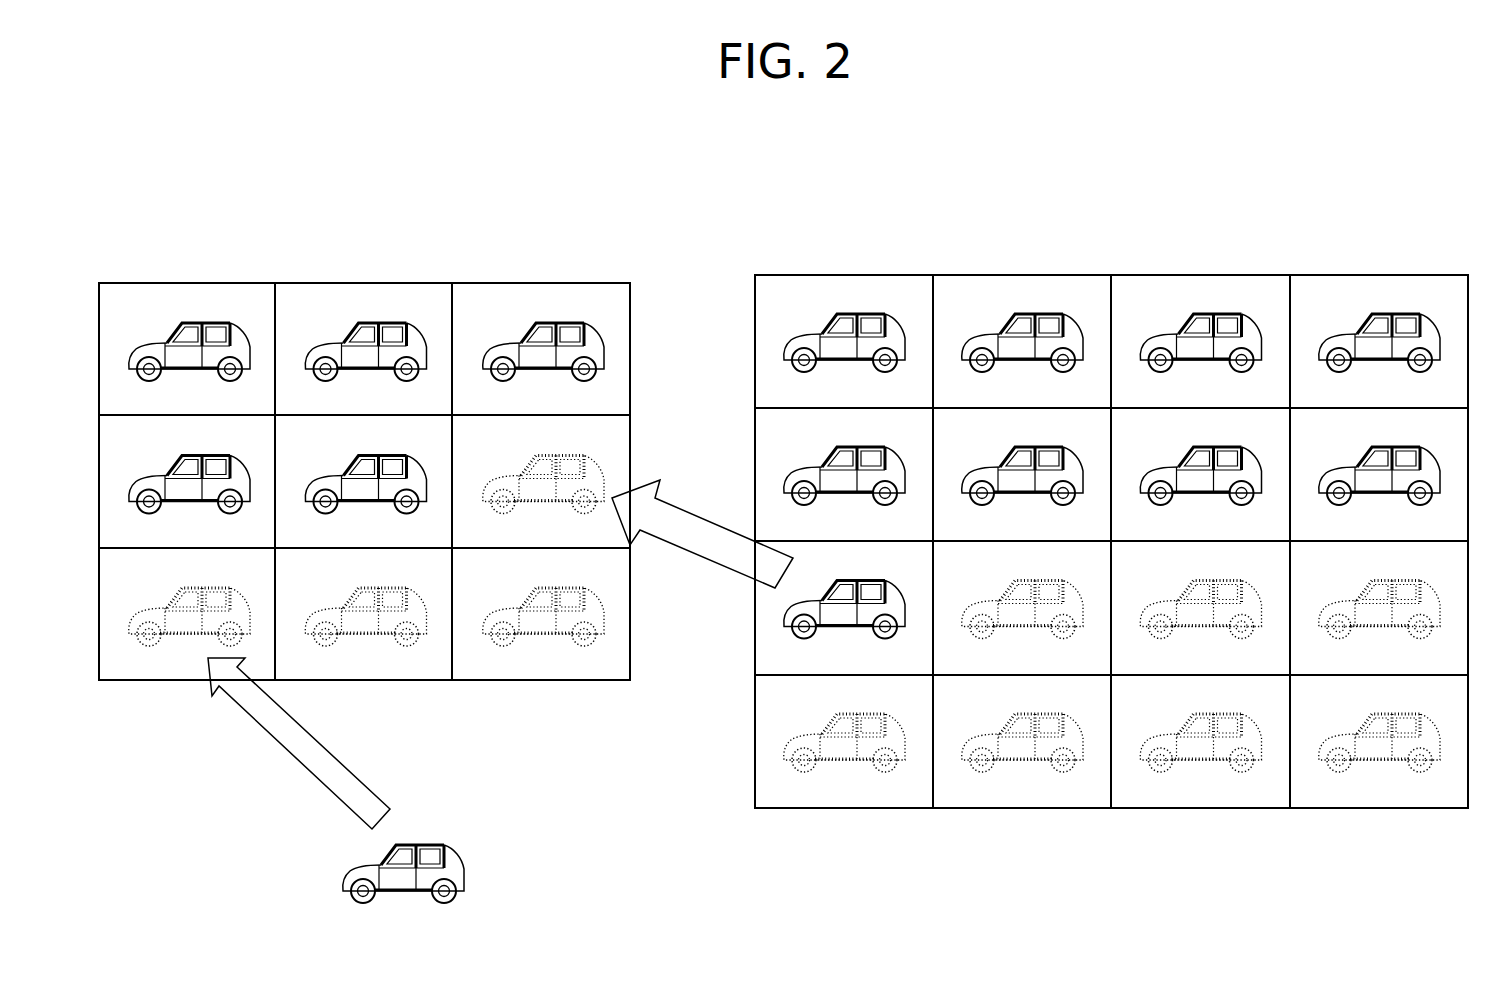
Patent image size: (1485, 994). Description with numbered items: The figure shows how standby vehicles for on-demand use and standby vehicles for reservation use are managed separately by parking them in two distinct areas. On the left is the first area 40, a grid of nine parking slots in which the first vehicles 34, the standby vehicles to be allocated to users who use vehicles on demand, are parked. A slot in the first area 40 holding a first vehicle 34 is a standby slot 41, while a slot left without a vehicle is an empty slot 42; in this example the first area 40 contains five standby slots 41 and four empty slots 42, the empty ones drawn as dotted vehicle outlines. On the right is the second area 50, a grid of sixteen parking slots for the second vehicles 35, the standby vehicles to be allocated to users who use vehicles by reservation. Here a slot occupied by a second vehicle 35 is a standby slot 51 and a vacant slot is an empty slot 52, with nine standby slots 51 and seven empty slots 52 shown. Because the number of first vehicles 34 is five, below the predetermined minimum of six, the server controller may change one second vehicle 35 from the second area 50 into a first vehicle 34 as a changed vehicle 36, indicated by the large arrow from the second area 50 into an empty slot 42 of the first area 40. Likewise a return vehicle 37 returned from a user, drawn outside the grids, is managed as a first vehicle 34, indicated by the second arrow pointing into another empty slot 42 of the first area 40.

The first area 40 is at (510, 200).
The standby slot 41 is at (192, 297).
The first vehicle 34 is at (372, 318).
The empty slot 42 is at (547, 657).
The second area 50 is at (1338, 183).
The standby slot 51 is at (848, 290).
The second vehicle 35 is at (1028, 310).
The changed vehicle 36 is at (782, 617).
The return vehicle 37 is at (430, 845).
The empty slot 52 is at (1377, 788).